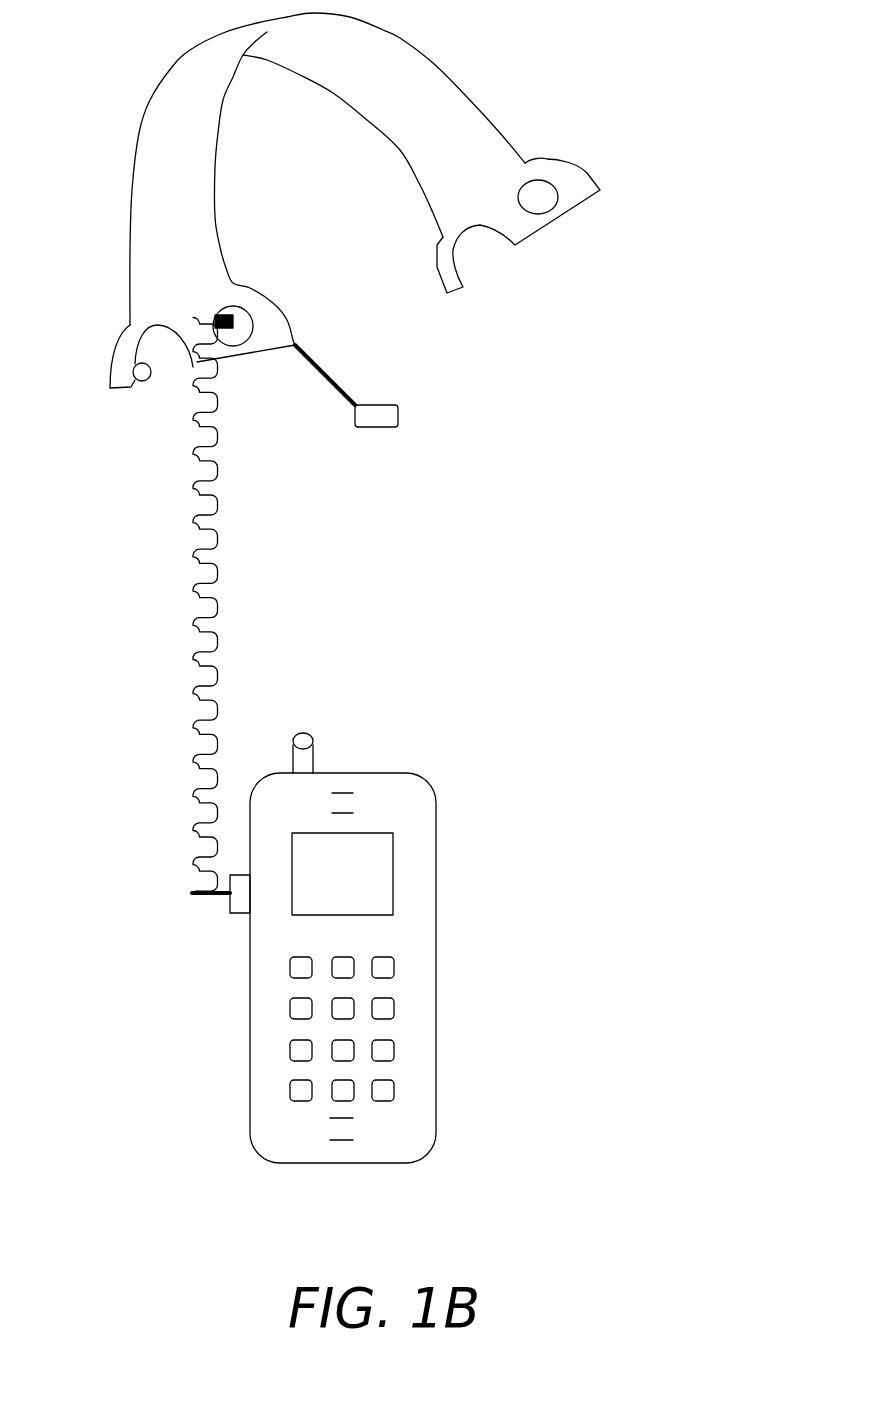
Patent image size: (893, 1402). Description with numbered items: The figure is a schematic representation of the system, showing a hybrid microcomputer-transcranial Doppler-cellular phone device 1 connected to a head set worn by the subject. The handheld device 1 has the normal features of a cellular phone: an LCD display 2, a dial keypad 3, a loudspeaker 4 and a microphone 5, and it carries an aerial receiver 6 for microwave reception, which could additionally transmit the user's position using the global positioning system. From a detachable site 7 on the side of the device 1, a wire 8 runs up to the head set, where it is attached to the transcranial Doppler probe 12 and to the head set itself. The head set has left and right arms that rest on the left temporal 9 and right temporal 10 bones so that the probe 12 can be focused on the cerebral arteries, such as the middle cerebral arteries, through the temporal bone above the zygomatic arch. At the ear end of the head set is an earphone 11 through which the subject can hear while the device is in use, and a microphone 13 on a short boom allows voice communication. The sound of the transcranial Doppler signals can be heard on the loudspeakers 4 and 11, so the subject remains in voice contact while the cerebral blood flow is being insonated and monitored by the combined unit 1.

The functional unit 1 is at (401, 968).
The LCD display 2 is at (393, 841).
The dial keypad 3 is at (400, 1029).
The loudspeaker 4 is at (412, 759).
The microphone 5 is at (410, 1106).
The aerial receiver 6 is at (362, 716).
The detachable site 7 is at (187, 921).
The wire 8 is at (262, 606).
The left temporal arm 9 is at (365, 169).
The right temporal arm 10 is at (275, 197).
The earphone 11 is at (110, 401).
The transcranial Doppler probe 12 is at (302, 301).
The microphone 13 is at (415, 381).